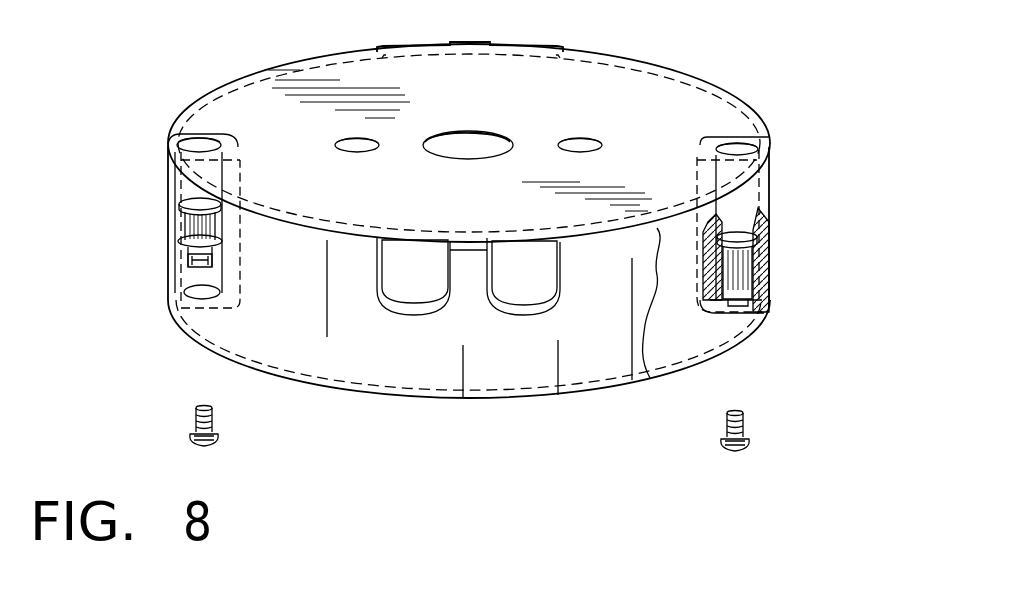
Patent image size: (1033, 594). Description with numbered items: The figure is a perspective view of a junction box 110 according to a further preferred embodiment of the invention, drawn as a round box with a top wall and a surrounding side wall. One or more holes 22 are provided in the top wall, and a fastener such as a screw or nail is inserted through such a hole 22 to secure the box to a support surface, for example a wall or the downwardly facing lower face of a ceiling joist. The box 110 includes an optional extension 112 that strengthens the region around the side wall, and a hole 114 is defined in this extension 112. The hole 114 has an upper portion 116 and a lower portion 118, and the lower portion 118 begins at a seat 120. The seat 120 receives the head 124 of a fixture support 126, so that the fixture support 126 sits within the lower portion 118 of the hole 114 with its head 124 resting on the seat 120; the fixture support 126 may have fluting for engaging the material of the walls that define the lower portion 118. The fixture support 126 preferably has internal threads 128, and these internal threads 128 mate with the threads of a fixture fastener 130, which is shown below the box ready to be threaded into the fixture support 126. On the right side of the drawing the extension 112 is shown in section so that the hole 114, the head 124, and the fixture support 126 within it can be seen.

The junction box 110 is at (792, 231).
The extension 112 is at (233, 146).
The hole 22 is at (354, 140).
The hole 114 is at (762, 142).
The upper portion 116 is at (735, 138).
The lower portion 118 is at (740, 303).
The seat 120 is at (222, 237).
The head 124 is at (756, 220).
The fixture support 126 is at (762, 243).
The internal threads 128 is at (200, 268).
The fixture fastener 130 is at (748, 433).